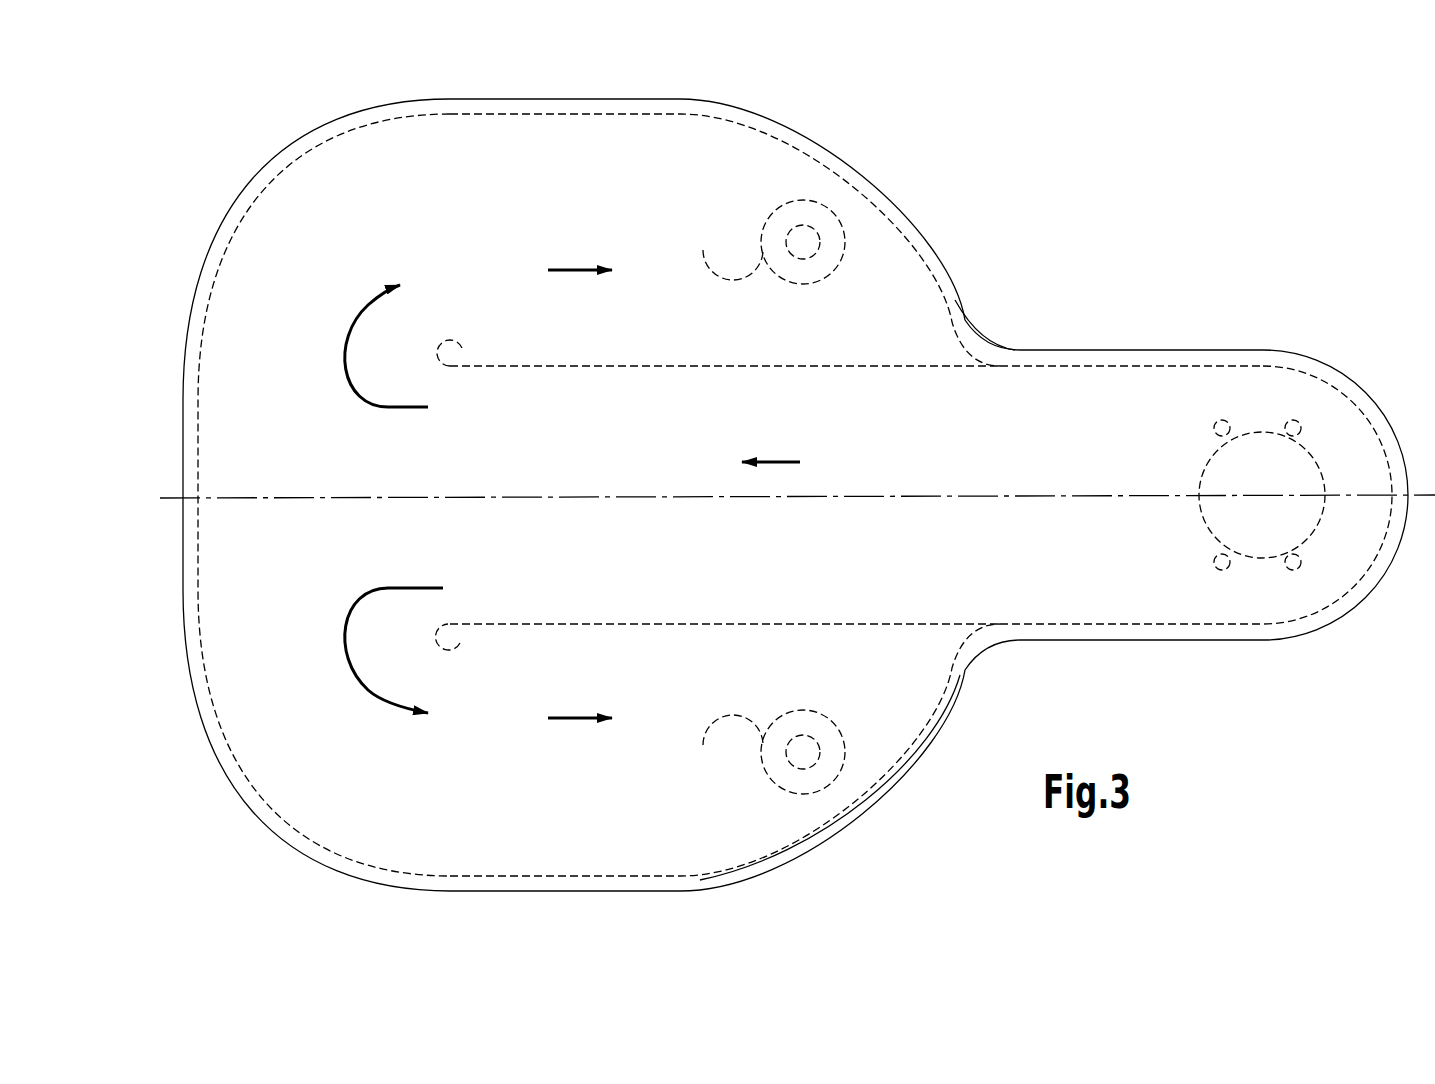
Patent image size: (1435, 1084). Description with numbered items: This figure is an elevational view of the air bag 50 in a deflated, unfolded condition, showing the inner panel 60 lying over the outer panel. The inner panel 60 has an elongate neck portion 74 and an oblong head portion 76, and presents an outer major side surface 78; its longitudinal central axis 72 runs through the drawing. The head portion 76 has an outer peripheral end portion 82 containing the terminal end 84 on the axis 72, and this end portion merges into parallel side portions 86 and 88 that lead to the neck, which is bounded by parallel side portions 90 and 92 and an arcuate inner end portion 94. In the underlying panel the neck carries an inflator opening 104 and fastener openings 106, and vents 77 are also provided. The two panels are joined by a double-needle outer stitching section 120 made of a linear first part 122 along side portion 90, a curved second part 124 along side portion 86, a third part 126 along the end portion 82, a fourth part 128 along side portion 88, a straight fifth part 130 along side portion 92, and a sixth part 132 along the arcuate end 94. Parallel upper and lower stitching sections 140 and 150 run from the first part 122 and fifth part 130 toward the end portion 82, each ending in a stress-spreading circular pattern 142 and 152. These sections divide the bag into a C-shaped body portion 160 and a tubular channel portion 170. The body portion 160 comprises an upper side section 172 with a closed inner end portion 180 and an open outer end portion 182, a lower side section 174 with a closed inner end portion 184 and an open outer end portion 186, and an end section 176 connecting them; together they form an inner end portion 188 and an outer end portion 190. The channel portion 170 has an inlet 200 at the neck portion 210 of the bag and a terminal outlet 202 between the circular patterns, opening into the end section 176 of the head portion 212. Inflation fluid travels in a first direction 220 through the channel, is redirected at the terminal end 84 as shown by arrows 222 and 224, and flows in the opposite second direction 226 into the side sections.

The air bag 50 is at (1008, 215).
The inner panel 60 is at (880, 190).
The longitudinal central axis 72 is at (313, 497).
The neck portion 74 is at (1093, 338).
The head portion 76 is at (800, 118).
The vents 77 is at (767, 497).
The outer major side surface 78 is at (780, 188).
The outer peripheral end portion 82 is at (210, 357).
The terminal end 84 is at (183, 498).
The side portion 86 is at (417, 135).
The side portion 88 is at (400, 857).
The side portion 90 is at (1143, 350).
The side portion 92 is at (1137, 640).
The arcuate inner end portion 94 is at (1380, 577).
The inflator opening 104 is at (1200, 478).
The fastener openings 106 is at (1290, 422).
The outer stitching section 120 is at (1033, 372).
The first part 122 is at (1162, 366).
The second part 124 is at (540, 118).
The third part 126 is at (200, 440).
The fourth part 128 is at (510, 875).
The fifth part 130 is at (1108, 623).
The sixth part 132 is at (1390, 517).
The upper stitching section 140 is at (703, 366).
The circular pattern 142 is at (450, 340).
The lower stitching section 150 is at (625, 623).
The circular pattern 152 is at (445, 652).
The body portion 160 is at (190, 222).
The channel portion 170 is at (855, 355).
The upper side section 172 is at (507, 219).
The lower side section 174 is at (522, 805).
The end section 176 is at (257, 584).
The inner end portion 180 is at (925, 347).
The outer end portion 182 is at (433, 203).
The inner end portion 184 is at (913, 672).
The outer end portion 186 is at (410, 773).
The inner end portion 188 is at (907, 328).
The outer end portion 190 is at (218, 533).
The inlet 200 is at (1365, 440).
The terminal outlet 202 is at (477, 478).
The neck portion 210 is at (1183, 678).
The head portion 212 is at (882, 823).
The first direction 220 is at (770, 460).
The arrow 222 is at (392, 287).
The arrow 224 is at (365, 700).
The second direction 226 is at (557, 272).